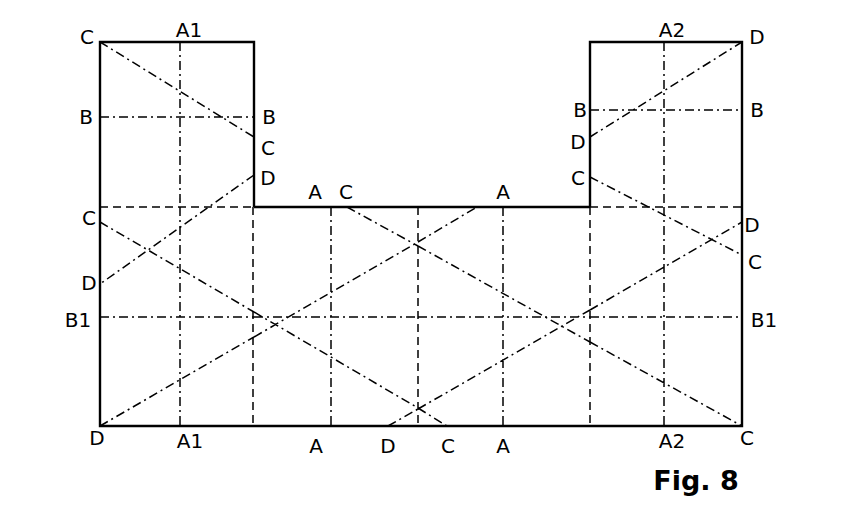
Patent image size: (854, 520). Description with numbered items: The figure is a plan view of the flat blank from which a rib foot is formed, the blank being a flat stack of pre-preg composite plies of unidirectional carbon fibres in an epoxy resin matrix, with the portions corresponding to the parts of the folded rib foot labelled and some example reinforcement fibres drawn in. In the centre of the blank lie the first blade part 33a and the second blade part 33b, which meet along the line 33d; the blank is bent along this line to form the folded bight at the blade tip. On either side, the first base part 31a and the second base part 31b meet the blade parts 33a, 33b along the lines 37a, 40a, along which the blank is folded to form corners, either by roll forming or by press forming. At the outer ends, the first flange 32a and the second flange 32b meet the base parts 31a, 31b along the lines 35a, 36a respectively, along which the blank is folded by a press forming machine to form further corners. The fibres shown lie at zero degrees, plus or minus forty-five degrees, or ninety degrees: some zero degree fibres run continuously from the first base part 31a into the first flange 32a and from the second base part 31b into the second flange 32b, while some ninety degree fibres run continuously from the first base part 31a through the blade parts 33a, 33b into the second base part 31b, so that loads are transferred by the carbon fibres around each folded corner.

The first base part 31a is at (177, 316).
The second base part 31b is at (666, 316).
The first flange 32a is at (177, 163).
The second flange 32b is at (666, 148).
The first blade part 33a is at (336, 316).
The second blade part 33b is at (504, 316).
The fold line 33d is at (417, 272).
The fold line 35a is at (119, 203).
The fold line 36a is at (720, 207).
The fold line 37a is at (252, 403).
The fold line 40a is at (591, 397).